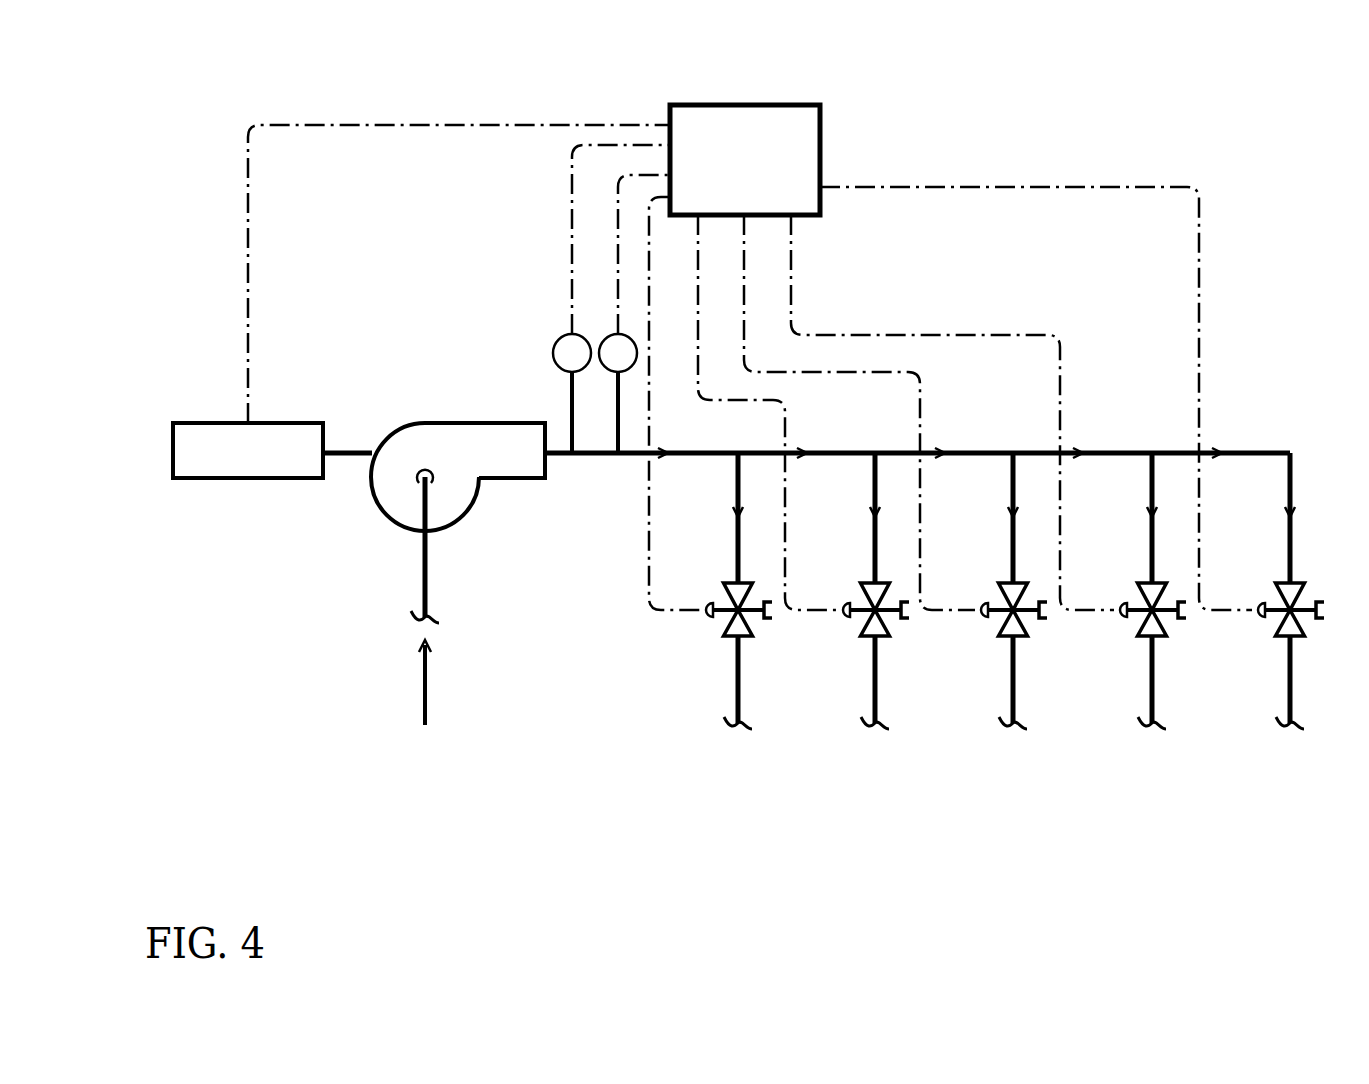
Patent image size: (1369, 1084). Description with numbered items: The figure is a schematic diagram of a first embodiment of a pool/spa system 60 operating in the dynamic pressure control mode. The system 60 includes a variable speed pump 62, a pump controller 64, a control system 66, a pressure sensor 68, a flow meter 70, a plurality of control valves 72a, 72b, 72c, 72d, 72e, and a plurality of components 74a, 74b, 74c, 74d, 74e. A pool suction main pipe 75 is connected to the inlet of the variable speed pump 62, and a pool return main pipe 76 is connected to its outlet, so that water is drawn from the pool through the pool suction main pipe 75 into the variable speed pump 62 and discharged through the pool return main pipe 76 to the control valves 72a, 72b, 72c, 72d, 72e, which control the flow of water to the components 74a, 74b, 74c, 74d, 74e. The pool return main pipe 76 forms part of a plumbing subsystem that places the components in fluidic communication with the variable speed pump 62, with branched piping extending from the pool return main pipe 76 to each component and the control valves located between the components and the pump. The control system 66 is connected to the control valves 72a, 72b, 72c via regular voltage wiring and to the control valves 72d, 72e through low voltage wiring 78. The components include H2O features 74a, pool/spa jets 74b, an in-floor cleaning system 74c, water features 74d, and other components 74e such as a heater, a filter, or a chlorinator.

The system 60 is at (178, 138).
The variable speed pump 62 is at (385, 491).
The pump controller 64 is at (218, 423).
The control system 66 is at (790, 130).
The pressure sensor 68 is at (556, 340).
The flow meter 70 is at (608, 338).
The control valve 72a is at (733, 640).
The control valve 72b is at (870, 640).
The control valve 72c is at (1008, 640).
The control valve 72d is at (1148, 640).
The control valve 72e is at (1287, 640).
The H2O features 74a is at (712, 790).
The pool/spa jets 74b is at (840, 782).
The in-floor cleaning system 74c is at (980, 790).
The water features 74d is at (1120, 782).
The other components 74e is at (1264, 790).
The pool suction main pipe 75 is at (430, 565).
The pool return main pipe 76 is at (640, 456).
The low voltage wiring 78 is at (908, 189).